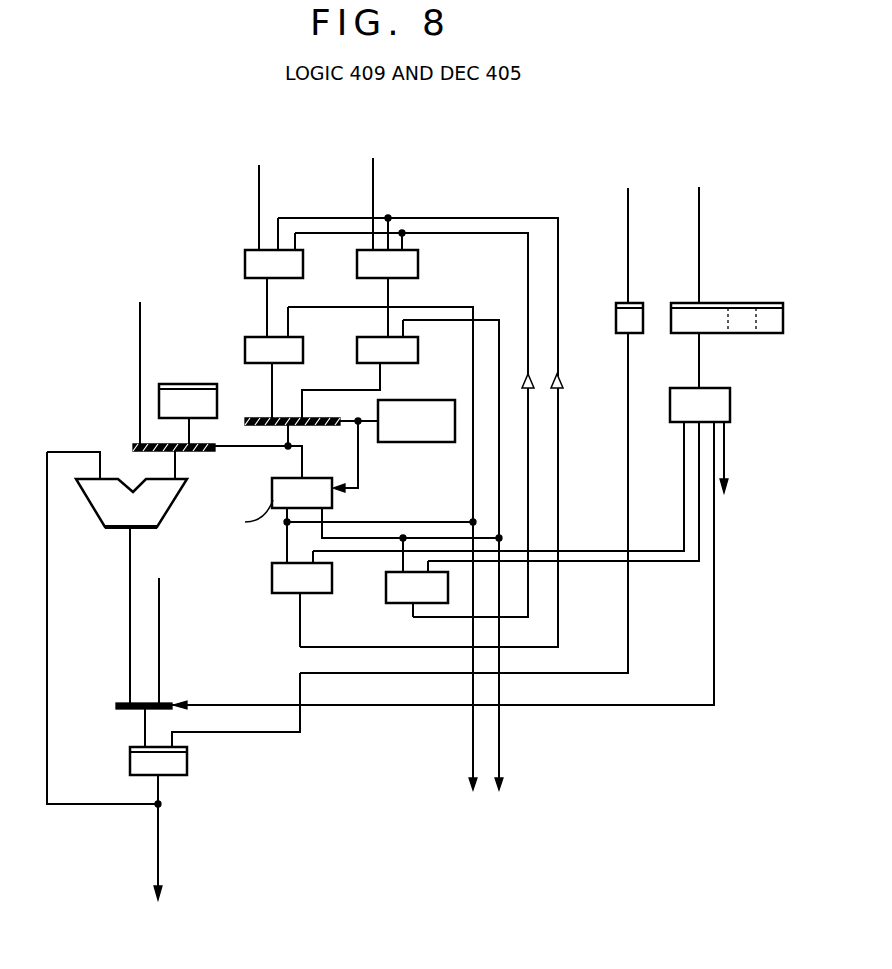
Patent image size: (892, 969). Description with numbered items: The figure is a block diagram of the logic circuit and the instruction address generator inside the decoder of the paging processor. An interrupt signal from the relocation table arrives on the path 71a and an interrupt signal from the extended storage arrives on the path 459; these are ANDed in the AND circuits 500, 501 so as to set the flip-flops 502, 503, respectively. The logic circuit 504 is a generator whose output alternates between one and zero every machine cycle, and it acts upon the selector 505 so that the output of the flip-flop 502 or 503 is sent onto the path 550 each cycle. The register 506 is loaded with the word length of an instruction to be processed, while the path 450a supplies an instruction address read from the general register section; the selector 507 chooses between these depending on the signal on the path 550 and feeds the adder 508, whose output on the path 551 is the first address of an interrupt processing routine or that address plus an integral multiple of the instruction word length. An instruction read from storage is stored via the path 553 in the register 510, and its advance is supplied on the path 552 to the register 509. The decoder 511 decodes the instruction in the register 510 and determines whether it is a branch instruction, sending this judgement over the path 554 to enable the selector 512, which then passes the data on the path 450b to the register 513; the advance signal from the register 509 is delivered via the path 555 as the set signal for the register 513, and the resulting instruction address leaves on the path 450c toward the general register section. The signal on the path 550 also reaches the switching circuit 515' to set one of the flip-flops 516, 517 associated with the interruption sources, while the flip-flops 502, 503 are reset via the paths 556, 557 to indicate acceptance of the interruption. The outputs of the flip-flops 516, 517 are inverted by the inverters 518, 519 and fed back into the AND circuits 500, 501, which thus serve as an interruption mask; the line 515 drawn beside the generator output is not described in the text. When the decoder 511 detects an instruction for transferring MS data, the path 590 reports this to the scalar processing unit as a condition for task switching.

The path 459 is at (259, 199).
The path 71a is at (373, 197).
The AND circuit 500 is at (245, 262).
The AND circuit 501 is at (418, 262).
The flip-flop 502 is at (297, 337).
The flip-flop 503 is at (430, 381).
The logic circuit 504 is at (455, 418).
The selector 505 is at (251, 418).
The register 506 is at (194, 384).
The selector 507 is at (134, 446).
The adder 508 is at (165, 520).
The register 509 is at (622, 302).
The register 510 is at (714, 307).
The decoder 511 is at (705, 388).
The selector 512 is at (168, 700).
The register 513 is at (187, 762).
The signal line 515 is at (384, 454).
The switching circuit 515' is at (234, 520).
The flip-flop 516 is at (272, 580).
The flip-flop 517 is at (388, 602).
The inverter 518 is at (563, 380).
The inverter 519 is at (534, 378).
The path 550 is at (232, 448).
The path 551 is at (128, 607).
The path 552 is at (628, 238).
The path 553 is at (699, 237).
The path 554 is at (714, 640).
The path 555 is at (628, 640).
The path 556 is at (470, 493).
The path 557 is at (499, 490).
The path 590 is at (724, 455).
The path 450a is at (140, 342).
The path 450b is at (155, 632).
The path 450c is at (155, 872).